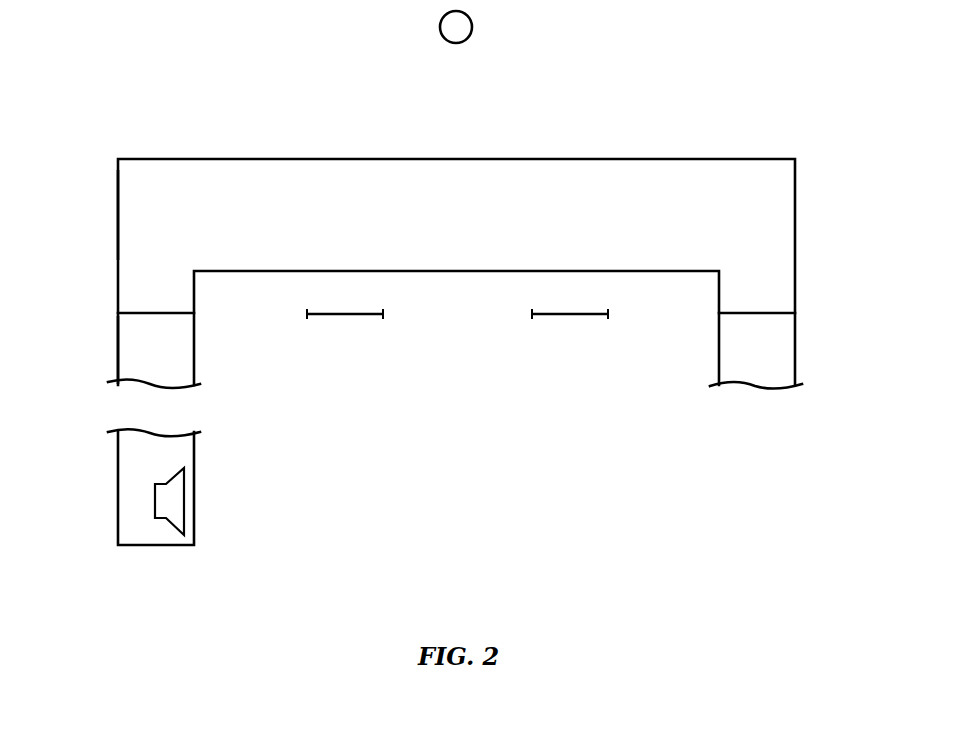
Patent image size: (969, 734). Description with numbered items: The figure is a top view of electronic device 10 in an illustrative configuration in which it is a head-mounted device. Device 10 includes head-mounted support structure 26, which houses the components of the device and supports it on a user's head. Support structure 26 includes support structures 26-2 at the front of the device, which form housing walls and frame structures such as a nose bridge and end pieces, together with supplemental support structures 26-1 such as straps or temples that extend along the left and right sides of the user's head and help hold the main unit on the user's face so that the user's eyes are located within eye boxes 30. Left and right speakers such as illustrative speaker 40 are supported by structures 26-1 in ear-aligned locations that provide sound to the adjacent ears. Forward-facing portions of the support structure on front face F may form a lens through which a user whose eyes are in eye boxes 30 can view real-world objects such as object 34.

The electronic device 10 is at (805, 81).
The head-mounted support structure 26 is at (817, 158).
The support structures 26-1 is at (128, 350).
The support structures 26-2 is at (128, 237).
The eye boxes 30 is at (532, 314).
The object 34 is at (473, 23).
The speaker 40 is at (165, 505).
The front face F is at (286, 138).